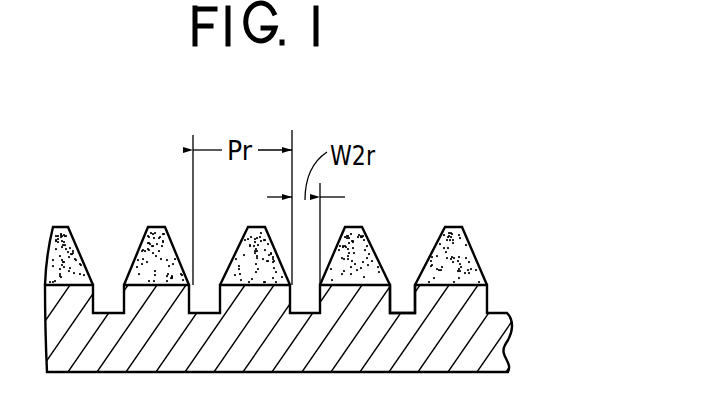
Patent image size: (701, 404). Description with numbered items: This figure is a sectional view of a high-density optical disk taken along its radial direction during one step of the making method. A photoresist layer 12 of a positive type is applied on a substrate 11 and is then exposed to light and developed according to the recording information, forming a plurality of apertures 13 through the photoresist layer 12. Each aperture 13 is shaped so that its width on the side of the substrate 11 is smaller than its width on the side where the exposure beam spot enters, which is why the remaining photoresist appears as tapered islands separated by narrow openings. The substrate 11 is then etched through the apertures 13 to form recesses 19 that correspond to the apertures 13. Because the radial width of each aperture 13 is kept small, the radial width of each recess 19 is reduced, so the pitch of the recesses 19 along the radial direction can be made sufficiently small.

The substrate 11 is at (483, 348).
The photoresist layer 12 is at (465, 262).
The aperture 13 is at (148, 247).
The recess 19 is at (402, 300).